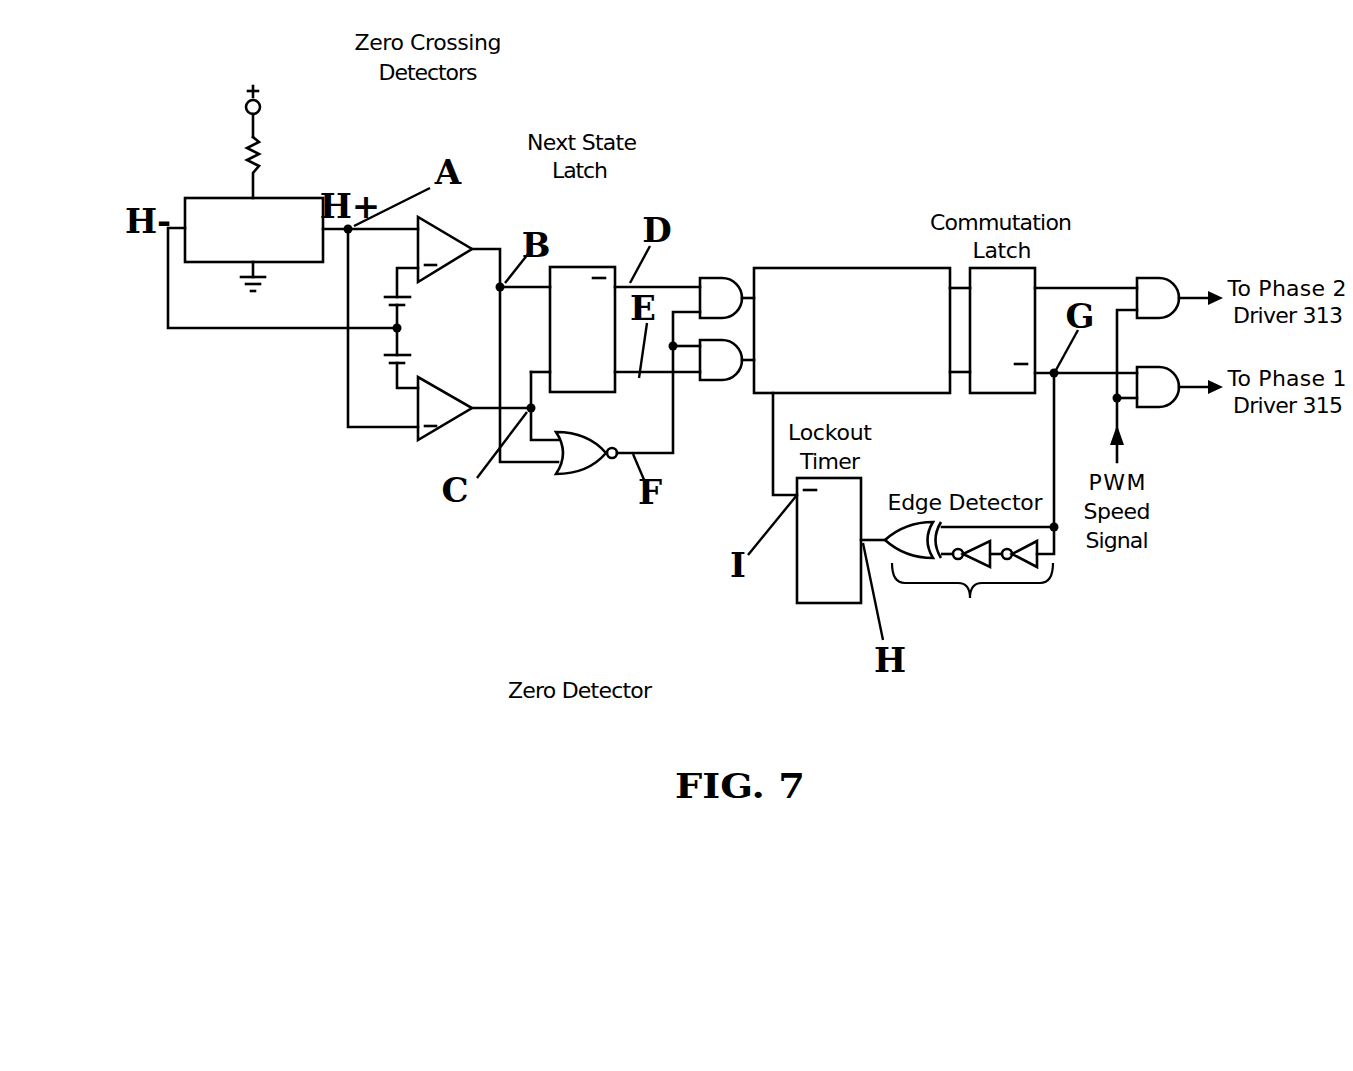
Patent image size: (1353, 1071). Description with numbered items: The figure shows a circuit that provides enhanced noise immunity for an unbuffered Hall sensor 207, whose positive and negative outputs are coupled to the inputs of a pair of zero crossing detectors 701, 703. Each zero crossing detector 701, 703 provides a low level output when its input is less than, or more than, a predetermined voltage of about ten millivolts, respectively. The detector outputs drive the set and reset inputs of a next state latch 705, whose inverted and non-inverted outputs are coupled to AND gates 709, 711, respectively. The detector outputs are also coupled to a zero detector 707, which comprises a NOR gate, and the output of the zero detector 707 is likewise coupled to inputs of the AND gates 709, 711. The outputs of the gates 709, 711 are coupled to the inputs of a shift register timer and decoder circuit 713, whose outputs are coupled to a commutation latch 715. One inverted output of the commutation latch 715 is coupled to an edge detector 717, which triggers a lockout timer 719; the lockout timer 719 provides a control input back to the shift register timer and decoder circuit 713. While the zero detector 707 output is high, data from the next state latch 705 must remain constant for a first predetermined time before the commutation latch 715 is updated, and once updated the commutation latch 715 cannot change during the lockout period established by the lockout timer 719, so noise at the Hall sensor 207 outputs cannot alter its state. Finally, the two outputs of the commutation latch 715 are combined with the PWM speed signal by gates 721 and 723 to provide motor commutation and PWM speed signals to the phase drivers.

The Hall sensor 207 is at (193, 225).
The zero crossing detector 701 is at (440, 252).
The zero crossing detector 703 is at (442, 412).
The next state latch 705 is at (580, 278).
The zero detector 707 is at (575, 455).
The AND gate 709 is at (717, 287).
The AND gate 711 is at (715, 367).
The shift register timer and decoder circuit 713 is at (815, 277).
The commutation latch 715 is at (997, 377).
The edge detector 717 is at (970, 600).
The lockout timer 719 is at (813, 585).
The gate 721 is at (1142, 390).
The gate 723 is at (1162, 288).